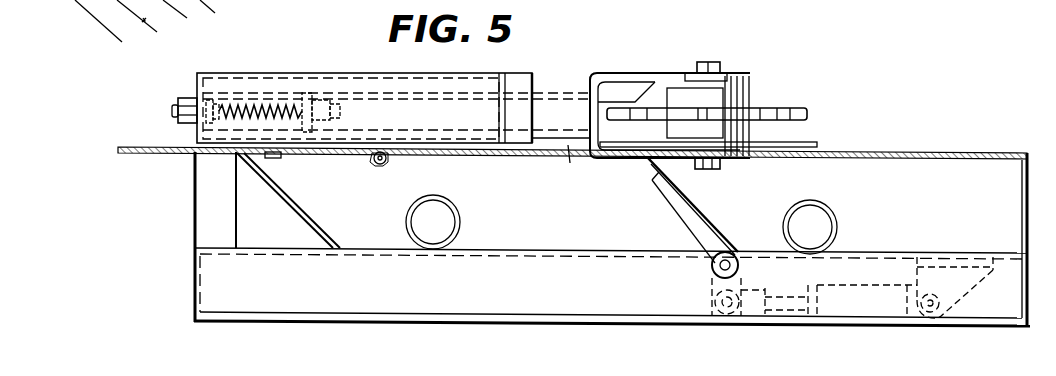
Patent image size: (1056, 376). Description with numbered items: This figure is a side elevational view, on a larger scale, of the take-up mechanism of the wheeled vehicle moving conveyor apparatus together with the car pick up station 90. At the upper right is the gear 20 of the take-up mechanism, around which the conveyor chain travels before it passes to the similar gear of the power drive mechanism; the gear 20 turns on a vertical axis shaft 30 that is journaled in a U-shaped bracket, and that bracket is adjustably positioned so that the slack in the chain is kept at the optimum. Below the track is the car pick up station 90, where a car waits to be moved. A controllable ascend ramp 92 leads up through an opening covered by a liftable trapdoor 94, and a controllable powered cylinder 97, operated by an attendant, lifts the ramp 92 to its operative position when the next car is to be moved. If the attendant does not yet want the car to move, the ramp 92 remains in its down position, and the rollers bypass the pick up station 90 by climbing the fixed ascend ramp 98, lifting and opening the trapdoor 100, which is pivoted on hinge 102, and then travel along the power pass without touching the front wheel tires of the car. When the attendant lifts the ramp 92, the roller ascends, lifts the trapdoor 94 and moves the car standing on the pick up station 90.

The gear 20 is at (785, 106).
The vertical axis shaft 30 is at (712, 62).
The car pick up station 90 is at (518, 152).
The controllable ascend ramp 92 is at (703, 210).
The liftable trapdoor 94 is at (683, 161).
The controllable powered cylinder 97 is at (847, 285).
The fixed ascend ramp 98 is at (290, 203).
The trapdoor 100 is at (353, 162).
The hinge 102 is at (386, 160).